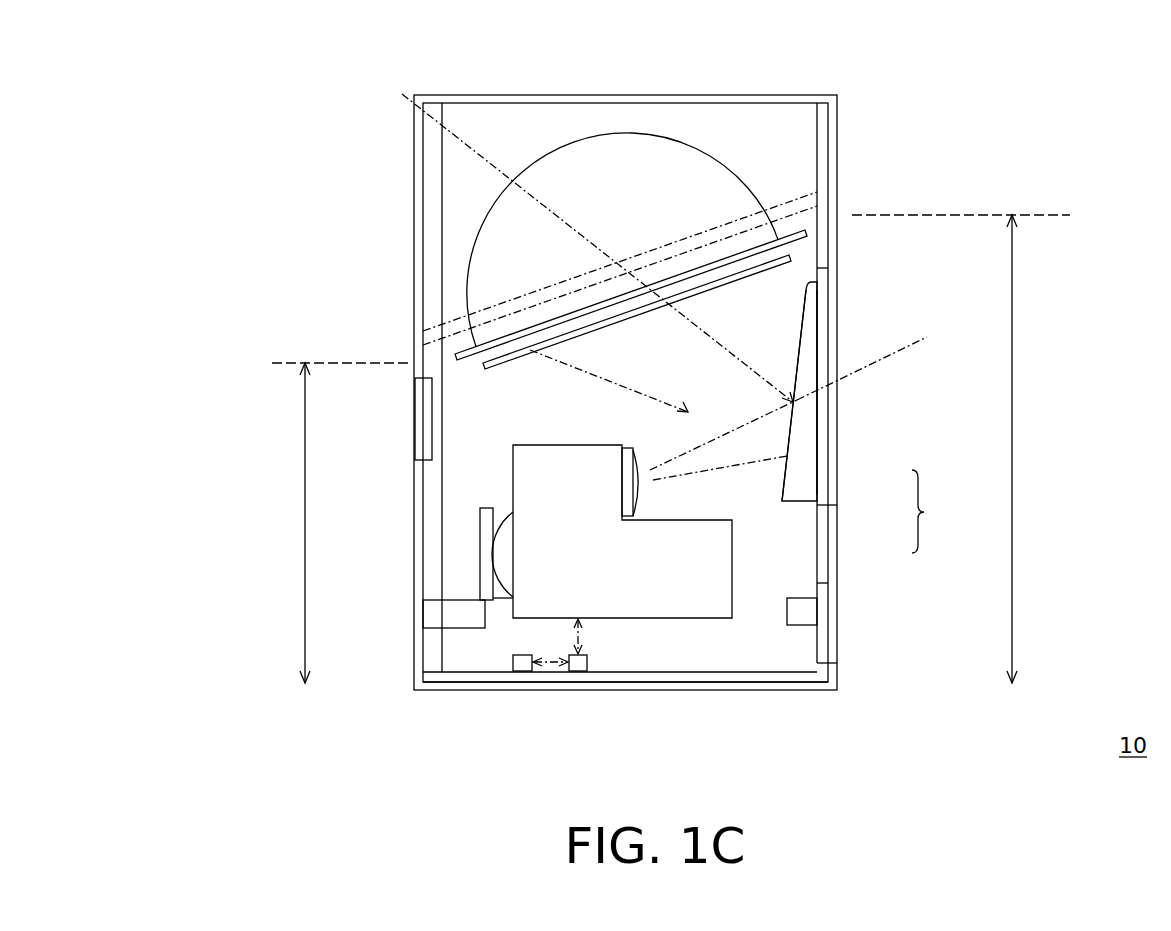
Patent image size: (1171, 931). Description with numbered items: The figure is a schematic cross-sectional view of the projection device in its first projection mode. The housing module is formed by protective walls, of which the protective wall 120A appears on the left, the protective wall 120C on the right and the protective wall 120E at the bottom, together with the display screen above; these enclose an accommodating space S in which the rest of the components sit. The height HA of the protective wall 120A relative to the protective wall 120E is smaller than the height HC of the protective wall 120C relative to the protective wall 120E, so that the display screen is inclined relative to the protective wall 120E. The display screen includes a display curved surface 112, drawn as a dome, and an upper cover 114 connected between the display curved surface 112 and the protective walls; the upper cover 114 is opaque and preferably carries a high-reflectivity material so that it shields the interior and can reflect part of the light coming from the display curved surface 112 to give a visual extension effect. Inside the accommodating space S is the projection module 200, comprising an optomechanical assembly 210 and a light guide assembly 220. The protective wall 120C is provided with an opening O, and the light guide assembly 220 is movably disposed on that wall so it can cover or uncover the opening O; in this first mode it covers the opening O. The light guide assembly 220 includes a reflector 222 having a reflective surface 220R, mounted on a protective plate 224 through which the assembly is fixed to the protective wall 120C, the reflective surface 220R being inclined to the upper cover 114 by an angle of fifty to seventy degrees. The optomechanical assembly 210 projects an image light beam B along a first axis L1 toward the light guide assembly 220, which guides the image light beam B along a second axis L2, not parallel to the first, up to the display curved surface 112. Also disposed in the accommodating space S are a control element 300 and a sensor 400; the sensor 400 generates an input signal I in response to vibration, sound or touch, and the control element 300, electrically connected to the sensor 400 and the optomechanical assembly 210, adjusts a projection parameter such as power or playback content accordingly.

The display curved surface 112 is at (718, 180).
The upper cover 114 is at (810, 220).
The protective wall 120A is at (430, 578).
The protective wall 120C is at (822, 570).
The protective wall 120E is at (790, 672).
The projection module 200 is at (939, 511).
The optomechanical assembly 210 is at (727, 556).
The light guide assembly 220 is at (808, 492).
The reflector 222 is at (796, 406).
The reflective surface 220R is at (798, 432).
The protective plate 224 is at (803, 462).
The control element 300 is at (590, 668).
The sensor 400 is at (512, 660).
The opening O is at (828, 278).
The accommodating space S is at (475, 421).
The image light beam B is at (662, 438).
The input signal I is at (550, 668).
The first axis L1 is at (880, 350).
The second axis L2 is at (468, 138).
The height of protective wall 120A HA is at (328, 523).
The height of protective wall 120C HC is at (961, 449).